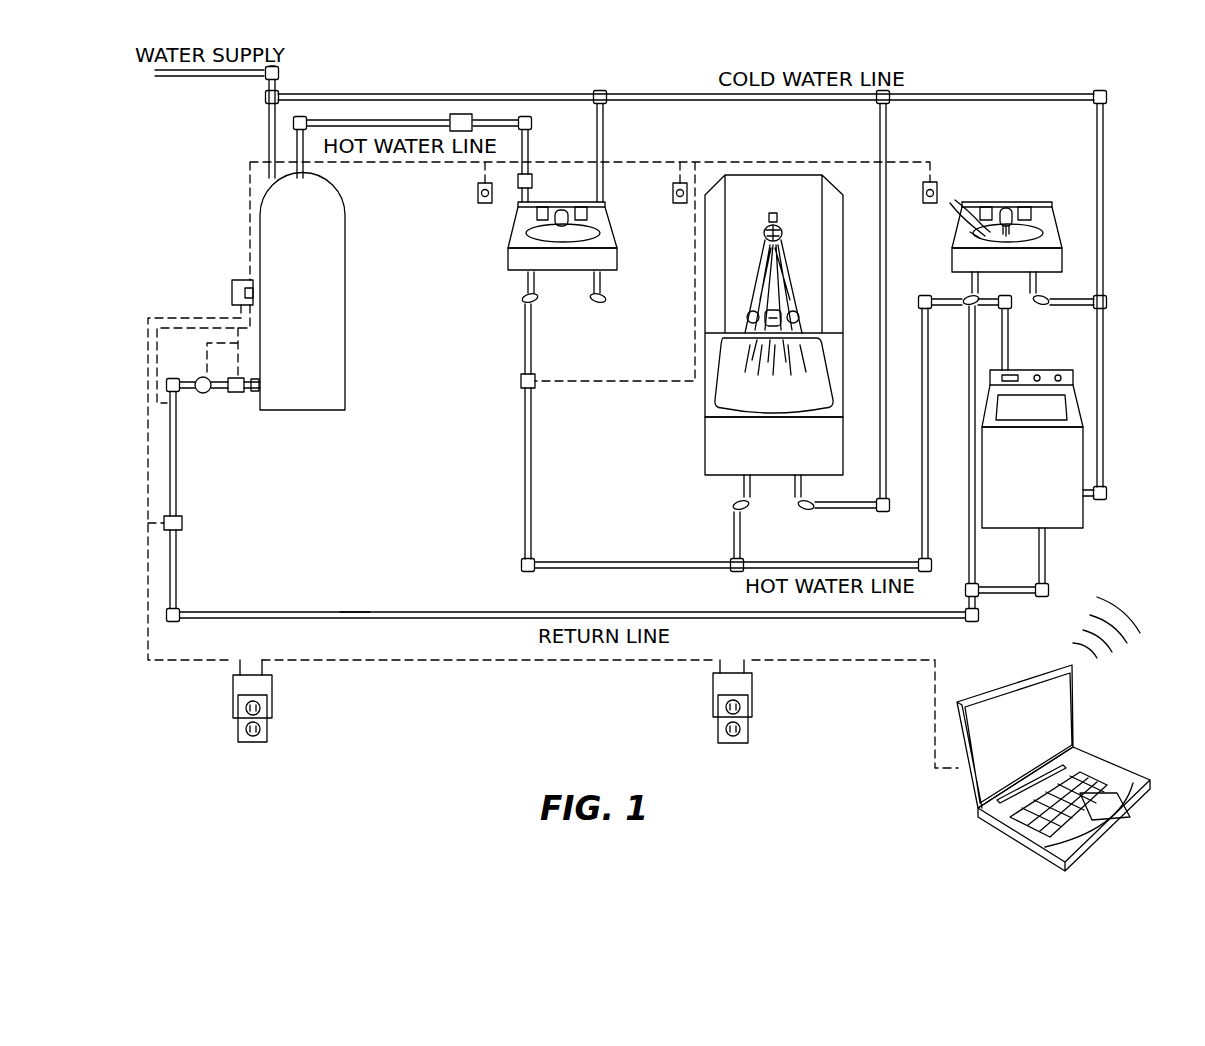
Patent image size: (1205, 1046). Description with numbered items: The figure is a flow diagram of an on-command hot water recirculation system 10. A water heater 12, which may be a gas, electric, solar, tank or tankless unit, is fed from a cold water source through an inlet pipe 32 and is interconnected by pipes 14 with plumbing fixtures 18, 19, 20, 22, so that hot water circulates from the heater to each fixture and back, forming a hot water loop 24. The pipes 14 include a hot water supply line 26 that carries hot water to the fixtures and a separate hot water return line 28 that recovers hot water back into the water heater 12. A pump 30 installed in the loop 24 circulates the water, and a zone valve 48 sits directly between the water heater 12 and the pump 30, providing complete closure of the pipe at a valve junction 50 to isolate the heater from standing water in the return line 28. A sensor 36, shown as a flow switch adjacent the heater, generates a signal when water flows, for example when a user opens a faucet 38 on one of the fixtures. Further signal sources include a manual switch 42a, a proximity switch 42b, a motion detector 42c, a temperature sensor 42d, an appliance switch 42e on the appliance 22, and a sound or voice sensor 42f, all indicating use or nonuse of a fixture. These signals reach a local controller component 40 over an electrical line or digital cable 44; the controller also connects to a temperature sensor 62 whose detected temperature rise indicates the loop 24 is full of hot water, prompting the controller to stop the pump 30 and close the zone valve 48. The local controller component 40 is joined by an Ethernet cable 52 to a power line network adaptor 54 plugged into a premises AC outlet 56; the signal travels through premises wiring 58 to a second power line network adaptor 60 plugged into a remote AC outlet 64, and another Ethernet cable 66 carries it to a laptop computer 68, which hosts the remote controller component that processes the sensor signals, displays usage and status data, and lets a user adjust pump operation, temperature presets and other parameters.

The hot water recirculation system 10 is at (170, 165).
The water heater 12 is at (323, 303).
The pipes 14 is at (742, 552).
The plumbing fixture 18 is at (618, 262).
The plumbing fixture 19 is at (705, 435).
The plumbing fixture 20 is at (1057, 216).
The plumbing fixture 22 is at (1065, 530).
The hot water loop 24 is at (735, 620).
The hot water supply line 26 is at (525, 488).
The hot water return line 28 is at (355, 620).
The pump 30 is at (203, 400).
The inlet pipe 32 is at (243, 78).
The sensor 36 is at (458, 113).
The faucet 38 is at (1005, 206).
The local controller component 40 is at (218, 278).
The manual switch 42a is at (478, 195).
The proximity switch 42b is at (672, 197).
The motion detector 42c is at (928, 208).
The temperature sensor 42d is at (535, 380).
The appliance switch 42e is at (1040, 374).
The sound or voice sensor 42f is at (533, 178).
The electrical line or digital cable 44 is at (250, 193).
The zone valve 48 is at (240, 396).
The valve junction 50 is at (225, 392).
The Ethernet cable 52 is at (148, 585).
The power line network adaptor 54 is at (232, 690).
The AC outlet 56 is at (235, 743).
The premises wiring 58 is at (500, 662).
The power line network adaptor 60 is at (748, 676).
The temperature sensor 62 is at (183, 523).
The AC outlet 64 is at (748, 732).
The Ethernet cable 66 is at (935, 730).
The computer 68 is at (1130, 757).